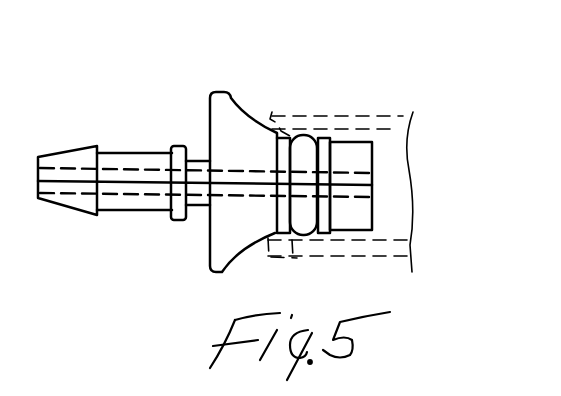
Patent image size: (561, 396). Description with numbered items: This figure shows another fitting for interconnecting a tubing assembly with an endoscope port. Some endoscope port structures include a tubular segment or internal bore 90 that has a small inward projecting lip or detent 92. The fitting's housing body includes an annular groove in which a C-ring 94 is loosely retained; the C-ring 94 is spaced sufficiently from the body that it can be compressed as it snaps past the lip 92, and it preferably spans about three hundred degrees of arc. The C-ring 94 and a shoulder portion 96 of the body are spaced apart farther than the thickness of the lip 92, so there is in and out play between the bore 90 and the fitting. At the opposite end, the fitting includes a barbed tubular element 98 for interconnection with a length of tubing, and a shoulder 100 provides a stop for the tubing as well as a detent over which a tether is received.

The barbed tubular element 98 is at (95, 116).
The shoulder 100 is at (176, 222).
The shoulder portion 96 is at (230, 94).
The lip 92 is at (294, 258).
The C-ring 94 is at (322, 153).
The internal bore 90 is at (313, 120).